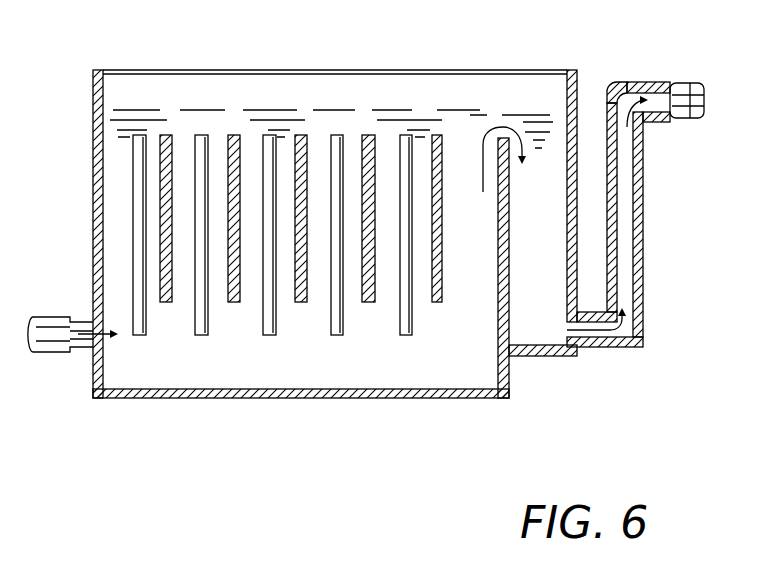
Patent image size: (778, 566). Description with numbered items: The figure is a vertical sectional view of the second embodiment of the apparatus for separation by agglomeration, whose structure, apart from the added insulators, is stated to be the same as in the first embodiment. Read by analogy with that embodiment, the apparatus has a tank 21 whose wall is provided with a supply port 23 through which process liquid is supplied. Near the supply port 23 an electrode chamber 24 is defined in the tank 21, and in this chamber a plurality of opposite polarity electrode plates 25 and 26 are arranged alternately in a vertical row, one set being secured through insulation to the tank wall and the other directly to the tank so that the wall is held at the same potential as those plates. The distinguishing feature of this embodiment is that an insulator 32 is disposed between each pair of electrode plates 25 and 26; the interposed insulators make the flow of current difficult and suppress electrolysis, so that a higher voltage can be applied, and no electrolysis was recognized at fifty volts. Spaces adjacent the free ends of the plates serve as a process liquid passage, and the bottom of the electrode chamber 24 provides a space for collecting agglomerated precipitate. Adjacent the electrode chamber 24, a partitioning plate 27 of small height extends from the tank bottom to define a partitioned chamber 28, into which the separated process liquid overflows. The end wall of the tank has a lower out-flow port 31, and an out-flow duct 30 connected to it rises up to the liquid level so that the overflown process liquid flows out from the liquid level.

The tank 21 is at (93, 160).
The inlet pipe 23 is at (103, 325).
The liquid 24 is at (320, 142).
The electrode plate 25 is at (160, 230).
The electrode plate 26 is at (230, 163).
The partition wall 27 is at (509, 195).
The outlet chamber 28 is at (552, 165).
The outlet pipe 30 is at (643, 222).
The outlet passage 31 is at (557, 328).
The insulator 32 is at (143, 330).